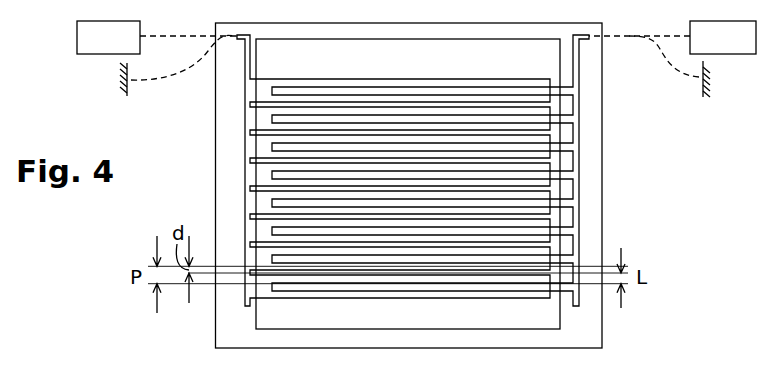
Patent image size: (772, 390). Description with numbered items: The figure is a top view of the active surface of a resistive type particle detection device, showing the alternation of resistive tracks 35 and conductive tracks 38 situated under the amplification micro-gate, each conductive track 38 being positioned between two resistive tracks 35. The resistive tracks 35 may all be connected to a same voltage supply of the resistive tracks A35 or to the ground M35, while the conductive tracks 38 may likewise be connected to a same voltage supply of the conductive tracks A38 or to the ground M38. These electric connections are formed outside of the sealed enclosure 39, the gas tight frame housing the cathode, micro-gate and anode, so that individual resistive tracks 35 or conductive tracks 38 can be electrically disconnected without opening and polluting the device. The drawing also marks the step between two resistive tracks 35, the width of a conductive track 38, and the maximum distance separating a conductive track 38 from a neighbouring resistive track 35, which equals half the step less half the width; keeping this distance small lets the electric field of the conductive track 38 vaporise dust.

The resistive tracks 35 is at (573, 92).
The conductive tracks 38 is at (258, 89).
The sealed enclosure 39 is at (597, 178).
The voltage supply of the conductive tracks A38 is at (157, 37).
The voltage supply of the resistive tracks A35 is at (672, 37).
The ground of the conductive tracks M38 is at (112, 71).
The ground of the resistive tracks M35 is at (701, 92).